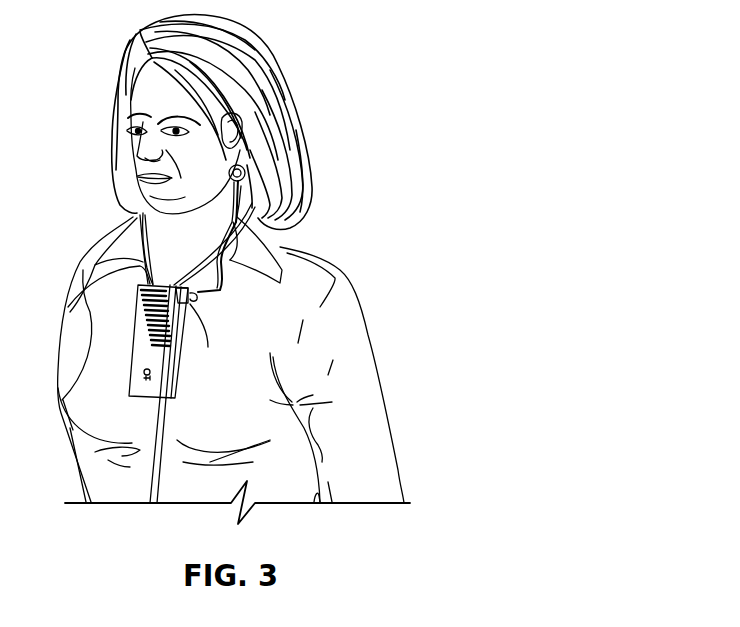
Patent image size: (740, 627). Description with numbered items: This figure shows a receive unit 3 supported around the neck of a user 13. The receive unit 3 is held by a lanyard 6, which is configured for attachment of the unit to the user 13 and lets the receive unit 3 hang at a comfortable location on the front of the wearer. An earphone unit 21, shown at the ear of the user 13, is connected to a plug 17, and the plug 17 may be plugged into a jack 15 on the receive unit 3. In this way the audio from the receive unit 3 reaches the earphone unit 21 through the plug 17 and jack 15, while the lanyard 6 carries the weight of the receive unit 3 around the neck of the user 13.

The receive unit 3 is at (181, 381).
The lanyard 6 is at (92, 307).
The user 13 is at (338, 272).
The jack 15 is at (180, 341).
The plug 17 is at (212, 312).
The earphone unit 21 is at (243, 136).